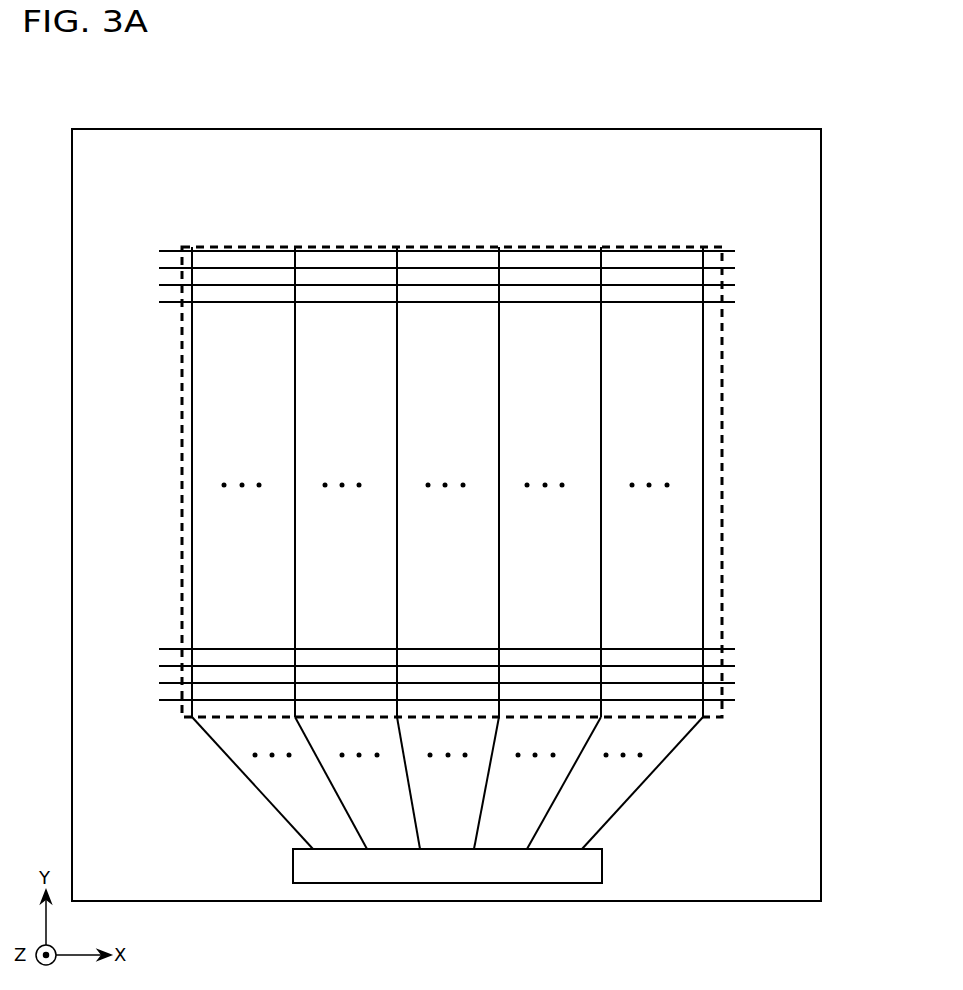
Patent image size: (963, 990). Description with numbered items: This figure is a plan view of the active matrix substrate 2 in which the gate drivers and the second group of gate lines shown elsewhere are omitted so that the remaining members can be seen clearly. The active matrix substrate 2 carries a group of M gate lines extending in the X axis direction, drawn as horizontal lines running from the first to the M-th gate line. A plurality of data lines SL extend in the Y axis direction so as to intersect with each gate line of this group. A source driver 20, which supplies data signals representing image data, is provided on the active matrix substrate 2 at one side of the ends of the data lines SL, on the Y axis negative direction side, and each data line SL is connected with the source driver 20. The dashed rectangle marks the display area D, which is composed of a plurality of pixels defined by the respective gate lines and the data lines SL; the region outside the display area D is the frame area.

The active matrix substrate 2 is at (457, 88).
The source driver 20 is at (603, 866).
The data lines SL is at (193, 258).
The display area D is at (724, 719).